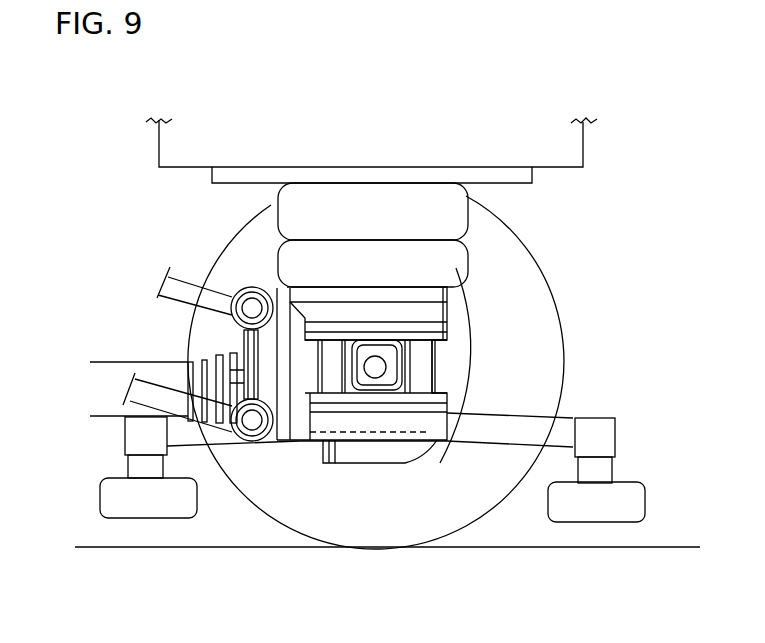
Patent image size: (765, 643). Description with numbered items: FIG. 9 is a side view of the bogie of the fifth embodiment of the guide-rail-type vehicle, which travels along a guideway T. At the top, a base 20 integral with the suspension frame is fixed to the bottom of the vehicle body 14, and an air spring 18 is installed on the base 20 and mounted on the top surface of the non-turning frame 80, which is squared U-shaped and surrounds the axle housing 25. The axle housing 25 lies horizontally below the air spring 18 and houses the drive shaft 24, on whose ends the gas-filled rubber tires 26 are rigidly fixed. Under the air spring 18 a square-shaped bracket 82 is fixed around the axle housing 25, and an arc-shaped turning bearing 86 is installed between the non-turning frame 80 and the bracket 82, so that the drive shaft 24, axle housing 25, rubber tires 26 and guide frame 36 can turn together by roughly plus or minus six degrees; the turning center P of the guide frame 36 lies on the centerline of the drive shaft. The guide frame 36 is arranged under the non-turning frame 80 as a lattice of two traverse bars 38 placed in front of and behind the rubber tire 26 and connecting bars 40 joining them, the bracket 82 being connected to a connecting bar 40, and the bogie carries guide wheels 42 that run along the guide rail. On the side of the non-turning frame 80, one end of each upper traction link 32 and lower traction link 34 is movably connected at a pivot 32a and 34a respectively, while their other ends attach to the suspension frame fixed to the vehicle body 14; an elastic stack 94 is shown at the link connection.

The vehicle body 14 is at (557, 153).
The base 20 is at (540, 175).
The air spring 18 is at (452, 226).
The rubber tire 26 is at (318, 540).
The guideway T is at (514, 545).
The turning bearing 86 is at (428, 313).
The axle housing 25 is at (445, 333).
The bracket 82 is at (422, 358).
The drive shaft 24 is at (435, 380).
The turning center P is at (375, 378).
The connecting bar 40 is at (533, 413).
The guide frame 36 is at (600, 418).
The traverse bar 38 is at (127, 467).
The guide wheel 42 is at (100, 500).
The upper traction link 32 is at (158, 287).
The upper arm pivot 32a is at (250, 288).
The lower traction link 34 is at (128, 390).
The lower arm pivot 34a is at (210, 447).
The non-turning frame 80 is at (230, 355).
The elastic stack 94 is at (188, 367).